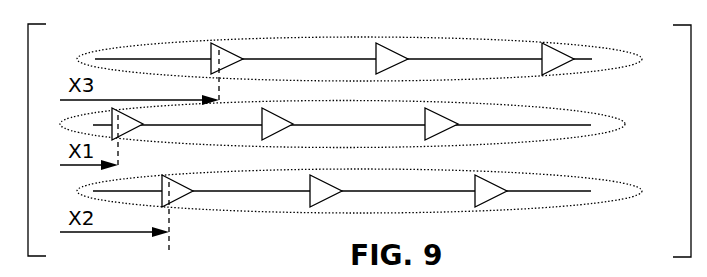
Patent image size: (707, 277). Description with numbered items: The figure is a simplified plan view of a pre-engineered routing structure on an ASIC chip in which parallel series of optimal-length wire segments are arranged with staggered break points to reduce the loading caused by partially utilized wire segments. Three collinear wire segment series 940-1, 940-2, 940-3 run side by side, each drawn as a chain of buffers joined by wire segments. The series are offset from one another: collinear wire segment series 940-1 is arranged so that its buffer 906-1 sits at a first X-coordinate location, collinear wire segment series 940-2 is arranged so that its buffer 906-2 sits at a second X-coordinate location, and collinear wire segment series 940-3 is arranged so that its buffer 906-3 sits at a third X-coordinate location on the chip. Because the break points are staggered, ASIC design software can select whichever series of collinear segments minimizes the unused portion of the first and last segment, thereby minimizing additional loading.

The buffer 906-1 is at (124, 128).
The buffer 906-2 is at (175, 196).
The buffer 906-3 is at (229, 56).
The collinear wire segment series 940-1 is at (595, 112).
The collinear wire segment series 940-2 is at (590, 175).
The collinear wire segment series 940-3 is at (458, 35).